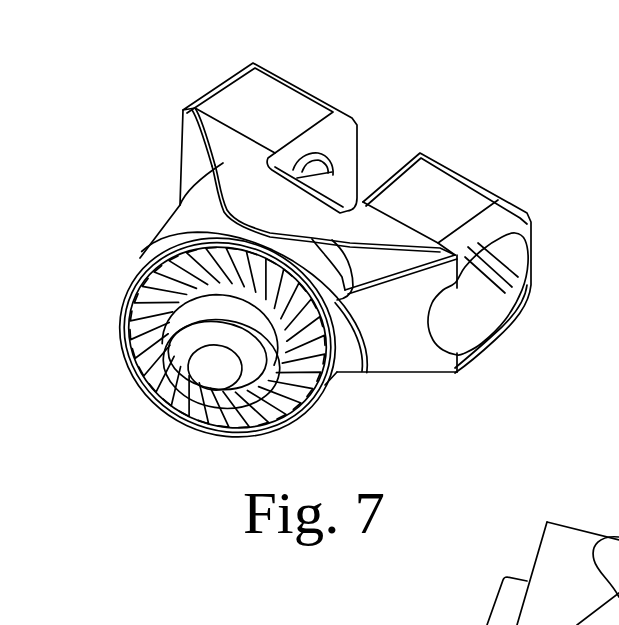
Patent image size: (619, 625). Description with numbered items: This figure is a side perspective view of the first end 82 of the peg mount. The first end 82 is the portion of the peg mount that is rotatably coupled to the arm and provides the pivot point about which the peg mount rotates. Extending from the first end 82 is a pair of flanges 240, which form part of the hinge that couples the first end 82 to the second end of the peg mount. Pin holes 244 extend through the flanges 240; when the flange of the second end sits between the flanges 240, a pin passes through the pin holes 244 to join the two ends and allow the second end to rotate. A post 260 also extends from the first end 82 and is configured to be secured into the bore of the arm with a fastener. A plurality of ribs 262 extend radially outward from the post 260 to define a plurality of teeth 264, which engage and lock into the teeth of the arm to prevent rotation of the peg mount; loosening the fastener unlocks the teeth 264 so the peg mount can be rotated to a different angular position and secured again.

The first end 82 is at (257, 217).
The flanges 240 is at (312, 92).
The pin holes 244 is at (335, 172).
The post 260 is at (123, 313).
The ribs 262 is at (153, 397).
The teeth 264 is at (132, 370).